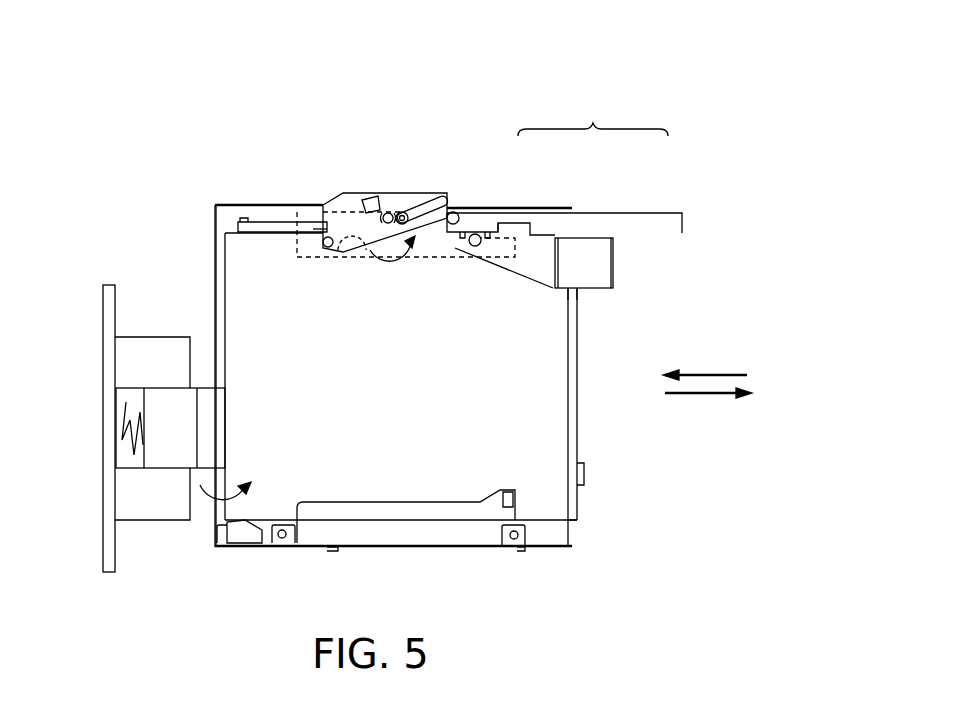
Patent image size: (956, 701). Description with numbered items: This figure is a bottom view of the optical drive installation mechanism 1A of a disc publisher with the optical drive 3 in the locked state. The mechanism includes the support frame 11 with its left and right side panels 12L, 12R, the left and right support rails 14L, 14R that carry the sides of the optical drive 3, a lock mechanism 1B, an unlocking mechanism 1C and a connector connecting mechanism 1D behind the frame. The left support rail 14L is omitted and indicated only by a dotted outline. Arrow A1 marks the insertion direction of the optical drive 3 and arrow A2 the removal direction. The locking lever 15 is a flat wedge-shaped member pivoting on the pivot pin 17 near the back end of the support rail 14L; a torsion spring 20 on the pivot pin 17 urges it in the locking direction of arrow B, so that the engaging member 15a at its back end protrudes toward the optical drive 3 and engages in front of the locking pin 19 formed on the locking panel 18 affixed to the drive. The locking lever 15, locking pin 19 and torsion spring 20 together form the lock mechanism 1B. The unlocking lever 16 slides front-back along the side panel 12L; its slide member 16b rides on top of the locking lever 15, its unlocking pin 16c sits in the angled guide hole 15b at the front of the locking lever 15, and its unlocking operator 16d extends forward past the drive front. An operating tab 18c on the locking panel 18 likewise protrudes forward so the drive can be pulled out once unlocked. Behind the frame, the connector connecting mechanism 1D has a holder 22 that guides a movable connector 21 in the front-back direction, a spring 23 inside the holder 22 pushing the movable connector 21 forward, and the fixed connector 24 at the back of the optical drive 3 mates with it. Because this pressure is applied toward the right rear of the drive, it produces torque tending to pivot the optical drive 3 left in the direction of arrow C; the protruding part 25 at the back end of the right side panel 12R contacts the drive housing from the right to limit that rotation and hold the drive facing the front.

The optical drive installation mechanism 1A is at (160, 198).
The lock mechanism 1B is at (319, 192).
The unlocking mechanism 1C is at (485, 111).
The connector connecting mechanism 1D is at (158, 554).
The optical drive 3 is at (578, 443).
The support frame 11 is at (591, 540).
The left side panel 12L is at (247, 205).
The right side panel 12R is at (540, 550).
The left support rail 14L is at (297, 247).
The right support rail 14R is at (450, 502).
The locking lever 15 is at (356, 178).
The engaging member 15a is at (357, 262).
The guide hole 15b is at (412, 200).
The unlocking lever 16 is at (593, 117).
The slide member 16b is at (488, 205).
The unlocking pin 16c is at (450, 205).
The unlocking operator 16d is at (632, 210).
The pivot pin 17 is at (388, 212).
The locking panel 18 is at (593, 302).
The operating tab 18c is at (615, 262).
The locking pin 19 is at (323, 250).
The torsion spring 20 is at (345, 255).
The movable connector 21 is at (163, 470).
The holder 22 is at (103, 368).
The spring 23 is at (116, 460).
The fixed connector 24 is at (208, 388).
The protruding part 25 is at (243, 545).
The insertion direction A1 is at (712, 372).
The removal direction A2 is at (698, 395).
The locking direction B is at (407, 262).
The pivot direction C is at (239, 484).